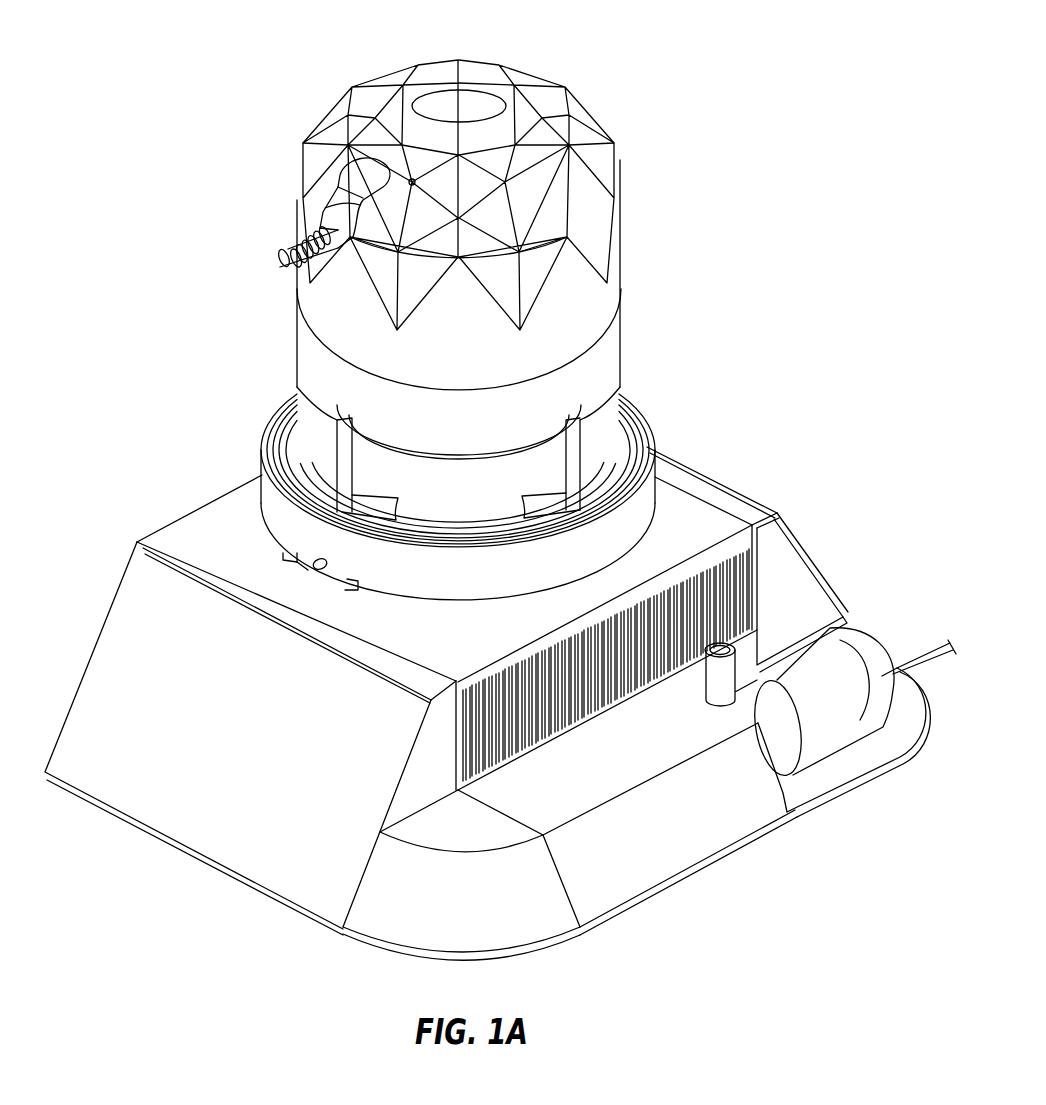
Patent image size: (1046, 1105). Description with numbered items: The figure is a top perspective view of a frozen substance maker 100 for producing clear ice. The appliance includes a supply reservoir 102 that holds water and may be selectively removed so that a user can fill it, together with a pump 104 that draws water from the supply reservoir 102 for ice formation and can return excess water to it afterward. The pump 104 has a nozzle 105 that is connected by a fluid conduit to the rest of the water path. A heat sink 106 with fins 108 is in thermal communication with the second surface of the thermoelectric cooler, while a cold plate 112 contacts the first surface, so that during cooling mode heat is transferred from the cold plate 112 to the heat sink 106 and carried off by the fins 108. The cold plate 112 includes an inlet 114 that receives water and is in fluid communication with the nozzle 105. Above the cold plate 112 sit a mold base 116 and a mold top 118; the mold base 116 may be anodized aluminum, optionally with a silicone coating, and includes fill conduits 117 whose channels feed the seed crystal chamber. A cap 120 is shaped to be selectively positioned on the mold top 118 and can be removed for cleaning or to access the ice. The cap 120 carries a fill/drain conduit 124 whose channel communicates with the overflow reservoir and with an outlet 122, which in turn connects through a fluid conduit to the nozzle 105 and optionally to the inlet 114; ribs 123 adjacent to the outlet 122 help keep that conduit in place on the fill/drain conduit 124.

The frozen substance maker 100 is at (123, 44).
The supply reservoir 102 is at (805, 548).
The pump 104 is at (838, 693).
The nozzle 105 is at (805, 812).
The heat sink 106 is at (697, 523).
The fins 108 is at (736, 551).
The cold plate 112 is at (647, 498).
The inlet 114 is at (318, 573).
The mold base 116 is at (612, 352).
The fill conduits 117 is at (616, 396).
The mold top 118 is at (612, 296).
The cap 120 is at (624, 165).
The outlet 122 is at (282, 266).
The ribs 123 is at (288, 242).
The fill/drain conduit 124 is at (316, 203).